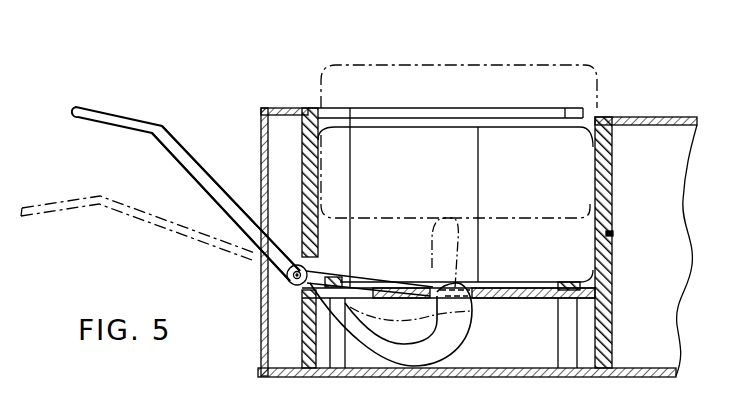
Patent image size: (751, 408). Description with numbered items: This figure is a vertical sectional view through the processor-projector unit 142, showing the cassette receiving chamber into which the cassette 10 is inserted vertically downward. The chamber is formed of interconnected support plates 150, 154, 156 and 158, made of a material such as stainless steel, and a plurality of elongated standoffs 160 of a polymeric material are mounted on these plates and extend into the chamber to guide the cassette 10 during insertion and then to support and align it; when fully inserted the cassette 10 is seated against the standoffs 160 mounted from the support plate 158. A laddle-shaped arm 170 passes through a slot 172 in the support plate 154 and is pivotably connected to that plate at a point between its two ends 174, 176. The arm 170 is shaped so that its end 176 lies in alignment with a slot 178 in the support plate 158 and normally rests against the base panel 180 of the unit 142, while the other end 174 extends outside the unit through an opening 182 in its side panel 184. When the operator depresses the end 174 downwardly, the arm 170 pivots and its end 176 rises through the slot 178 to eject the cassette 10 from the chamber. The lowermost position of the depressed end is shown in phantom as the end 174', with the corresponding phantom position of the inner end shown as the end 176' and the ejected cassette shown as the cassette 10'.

The cassette 10 is at (629, 235).
The cassette in phantom position 10' is at (464, 116).
The processor-projector unit 142 is at (639, 102).
The support plate 150 is at (396, 256).
The support plate 154 is at (307, 153).
The support plate 156 is at (612, 190).
The support plate 158 is at (553, 298).
The elongated standoff 160 is at (300, 125).
The laddle-shaped arm 170 is at (215, 193).
The slot 172 is at (290, 298).
The end of arm 174 is at (186, 172).
The end of arm in phantom position 174' is at (138, 206).
The end of arm 176 is at (416, 324).
The end of arm in phantom position 176' is at (438, 269).
The slot 178 is at (478, 290).
The base panel 180 is at (493, 367).
The opening 182 is at (287, 263).
The side panel 184 is at (261, 140).